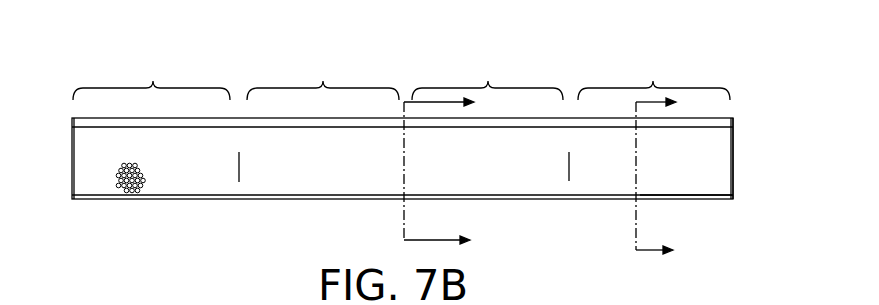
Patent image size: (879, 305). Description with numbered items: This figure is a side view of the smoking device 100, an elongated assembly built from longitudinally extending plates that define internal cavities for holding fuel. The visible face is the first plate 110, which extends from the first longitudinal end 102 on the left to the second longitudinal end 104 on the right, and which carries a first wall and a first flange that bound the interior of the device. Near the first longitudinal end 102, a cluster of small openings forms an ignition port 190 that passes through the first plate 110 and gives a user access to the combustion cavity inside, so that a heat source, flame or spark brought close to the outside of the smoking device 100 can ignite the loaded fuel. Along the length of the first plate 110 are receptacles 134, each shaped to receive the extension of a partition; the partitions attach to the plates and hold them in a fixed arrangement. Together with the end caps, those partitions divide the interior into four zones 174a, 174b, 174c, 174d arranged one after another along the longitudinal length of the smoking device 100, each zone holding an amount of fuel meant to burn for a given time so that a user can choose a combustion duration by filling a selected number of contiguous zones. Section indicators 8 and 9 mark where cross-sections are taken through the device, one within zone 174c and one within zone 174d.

The smoking device 100 is at (101, 67).
The first longitudinal end 102 is at (72, 134).
The second longitudinal end 104 is at (733, 136).
The first plate 110 is at (688, 176).
The receptacle 134 is at (240, 168).
The zone 174a is at (151, 78).
The zone 174b is at (323, 78).
The zone 174c is at (487, 78).
The zone 174d is at (654, 78).
The ignition port 190 is at (128, 193).
The section line 8- 8 is at (664, 176).
The section line 9- 9 is at (448, 171).